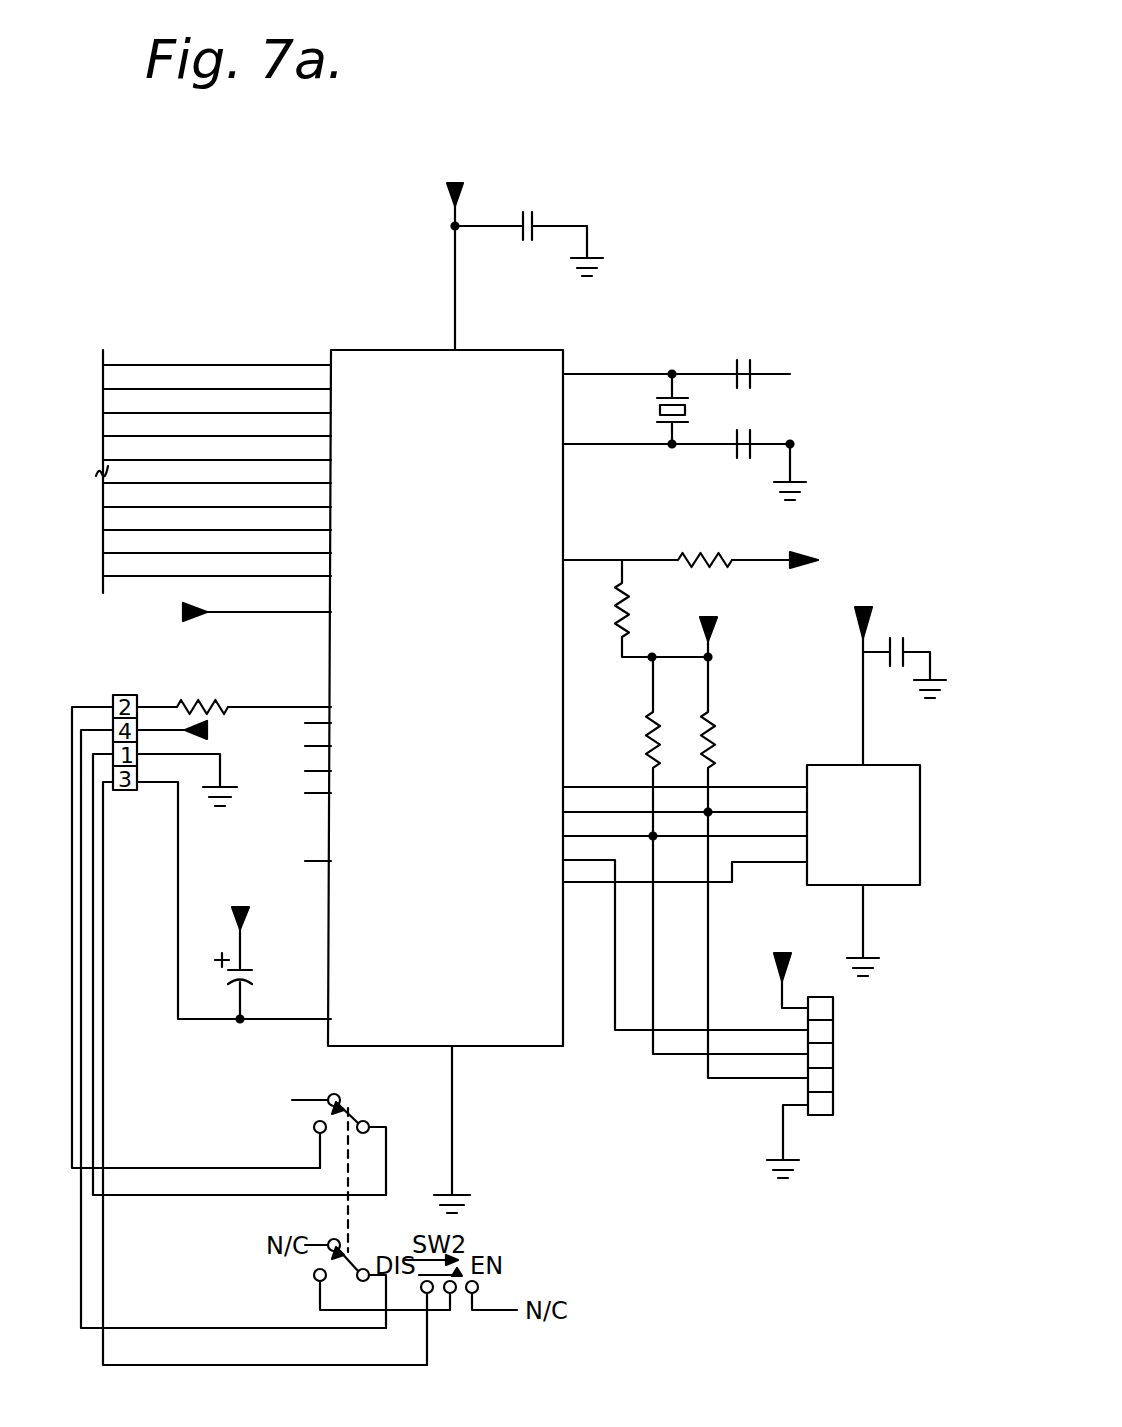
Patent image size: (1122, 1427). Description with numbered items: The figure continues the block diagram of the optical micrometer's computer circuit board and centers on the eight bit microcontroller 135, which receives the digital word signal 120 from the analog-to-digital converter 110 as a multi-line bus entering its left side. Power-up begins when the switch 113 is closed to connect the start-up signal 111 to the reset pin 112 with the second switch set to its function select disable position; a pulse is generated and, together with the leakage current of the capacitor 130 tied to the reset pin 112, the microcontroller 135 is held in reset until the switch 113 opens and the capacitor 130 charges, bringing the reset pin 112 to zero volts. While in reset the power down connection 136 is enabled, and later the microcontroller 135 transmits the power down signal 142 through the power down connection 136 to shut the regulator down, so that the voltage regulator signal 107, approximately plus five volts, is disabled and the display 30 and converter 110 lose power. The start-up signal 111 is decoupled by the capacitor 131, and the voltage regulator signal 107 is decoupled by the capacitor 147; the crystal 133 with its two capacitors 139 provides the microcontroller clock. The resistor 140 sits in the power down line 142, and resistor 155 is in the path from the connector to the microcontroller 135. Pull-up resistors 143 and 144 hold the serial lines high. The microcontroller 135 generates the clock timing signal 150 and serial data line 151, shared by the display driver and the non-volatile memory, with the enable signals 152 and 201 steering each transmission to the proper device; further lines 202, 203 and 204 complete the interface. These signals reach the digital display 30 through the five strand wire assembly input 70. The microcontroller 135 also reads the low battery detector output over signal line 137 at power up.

The digital display 30 is at (880, 960).
The five strand wire assembly input 70 is at (834, 1058).
The voltage regulator signal 107 is at (865, 615).
The analog-to-digital converter 110 is at (402, 362).
The start-up signal 111 is at (462, 196).
The reset pin 112 is at (331, 1020).
The power switch 113 is at (352, 1110).
The digital word signal 120 is at (103, 350).
The capacitor 130 is at (248, 968).
The capacitor 131 is at (538, 222).
The crystal 133 is at (688, 410).
The microcontroller 135 is at (457, 688).
The power down connection 136 is at (818, 559).
The low battery signal line 137 is at (190, 622).
The crystal capacitors 139 is at (752, 370).
The resistor 140 is at (701, 556).
The power down signal 142 is at (748, 559).
The pull-up resistor 143 is at (646, 745).
The pull-up resistor 144 is at (716, 741).
The capacitor 147 is at (904, 651).
The clock timing signal 150 is at (752, 1080).
The signal line 151 is at (672, 1059).
The enable signal 152 is at (638, 1032).
The resistor 155 is at (207, 701).
The enable signal 201 is at (727, 788).
The data line 202 is at (725, 813).
The data line 203 is at (725, 838).
The data line 204 is at (725, 863).